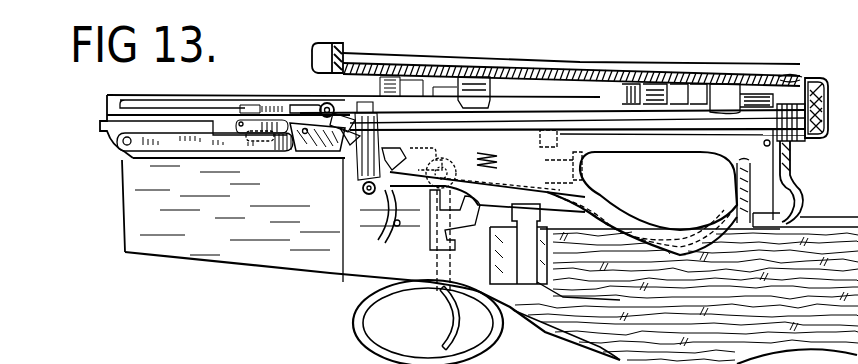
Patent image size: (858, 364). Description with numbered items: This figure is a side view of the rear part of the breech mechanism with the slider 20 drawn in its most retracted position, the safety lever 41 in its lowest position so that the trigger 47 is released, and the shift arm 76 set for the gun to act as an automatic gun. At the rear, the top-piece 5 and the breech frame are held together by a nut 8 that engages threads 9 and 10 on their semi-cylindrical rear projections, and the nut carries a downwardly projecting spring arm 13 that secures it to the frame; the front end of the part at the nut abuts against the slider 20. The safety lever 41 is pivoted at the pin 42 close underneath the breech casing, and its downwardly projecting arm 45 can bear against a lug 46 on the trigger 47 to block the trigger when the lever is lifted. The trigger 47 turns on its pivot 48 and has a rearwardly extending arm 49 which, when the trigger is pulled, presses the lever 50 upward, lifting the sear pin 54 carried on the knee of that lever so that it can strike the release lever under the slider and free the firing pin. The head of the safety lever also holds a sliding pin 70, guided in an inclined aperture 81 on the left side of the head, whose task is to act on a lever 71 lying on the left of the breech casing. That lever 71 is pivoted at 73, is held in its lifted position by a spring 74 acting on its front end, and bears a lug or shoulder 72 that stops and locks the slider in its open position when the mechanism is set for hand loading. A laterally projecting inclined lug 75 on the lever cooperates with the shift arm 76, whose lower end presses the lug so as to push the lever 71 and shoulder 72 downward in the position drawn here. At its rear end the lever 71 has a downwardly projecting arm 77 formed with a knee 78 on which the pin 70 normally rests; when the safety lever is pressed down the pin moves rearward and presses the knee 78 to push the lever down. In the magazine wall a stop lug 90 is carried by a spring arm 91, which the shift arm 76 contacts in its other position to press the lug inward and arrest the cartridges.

The top-piece 5 is at (571, 66).
The nut 8 is at (812, 80).
The threads 9 is at (800, 80).
The threads 10 is at (792, 143).
The spring arm 13 is at (788, 196).
The slider 20 is at (471, 88).
The safety lever 41 is at (518, 235).
The pin 42 is at (728, 173).
The arm 45 is at (458, 222).
The lug 46 is at (455, 226).
The trigger 47 is at (452, 305).
The pivot 48 is at (441, 173).
The arm 49 is at (490, 173).
The lever 50 is at (418, 197).
The sear pin 54 is at (363, 181).
The sliding pin 70 is at (430, 173).
The lever 71 is at (320, 128).
The lug or shoulder 72 is at (372, 102).
The pivot 73 is at (291, 117).
The spring 74 is at (240, 133).
The inclined lug 75 is at (341, 146).
The shift arm 76 is at (333, 131).
The arm 77 is at (373, 153).
The knee 78 is at (382, 198).
The inclined aperture 81 is at (407, 157).
The stop lug 90 is at (265, 141).
The spring arm 91 is at (197, 146).